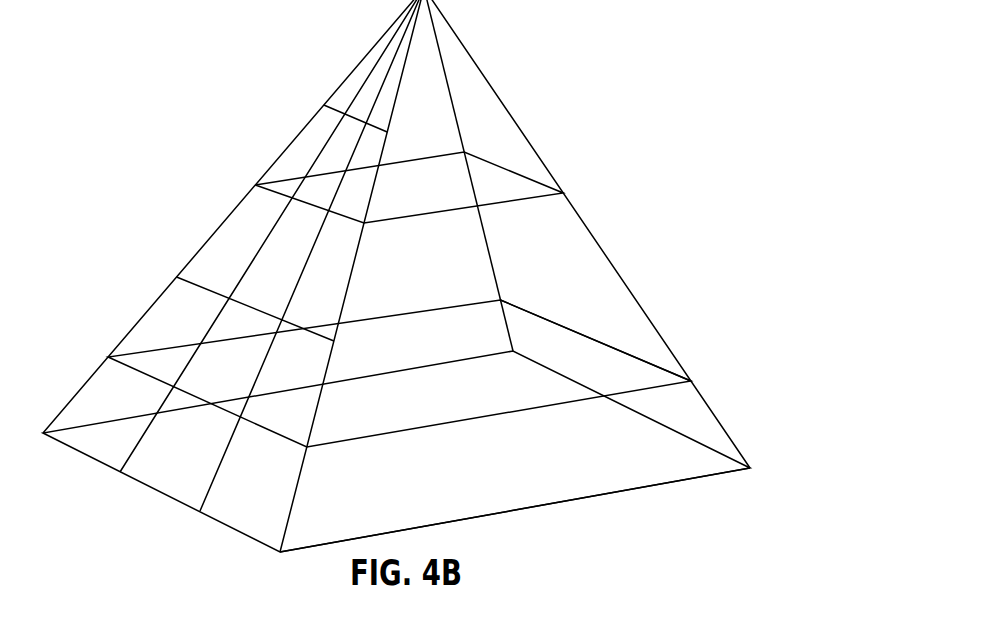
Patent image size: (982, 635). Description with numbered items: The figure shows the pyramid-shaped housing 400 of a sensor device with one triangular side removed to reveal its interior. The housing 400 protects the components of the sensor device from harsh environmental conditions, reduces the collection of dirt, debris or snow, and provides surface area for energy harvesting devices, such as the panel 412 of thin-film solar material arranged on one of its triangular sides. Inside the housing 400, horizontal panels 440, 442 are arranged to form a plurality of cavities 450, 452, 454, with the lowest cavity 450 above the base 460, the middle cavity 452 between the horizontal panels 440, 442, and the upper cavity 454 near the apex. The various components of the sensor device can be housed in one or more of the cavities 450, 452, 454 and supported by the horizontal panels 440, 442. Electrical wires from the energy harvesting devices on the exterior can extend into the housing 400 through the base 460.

The housing 400 is at (677, 358).
The panel 412 is at (156, 310).
The horizontal panel 440 is at (458, 398).
The horizontal panel 442 is at (438, 195).
The cavity 450 is at (624, 440).
The cavity 452 is at (549, 296).
The cavity 454 is at (478, 131).
The base 460 is at (473, 481).